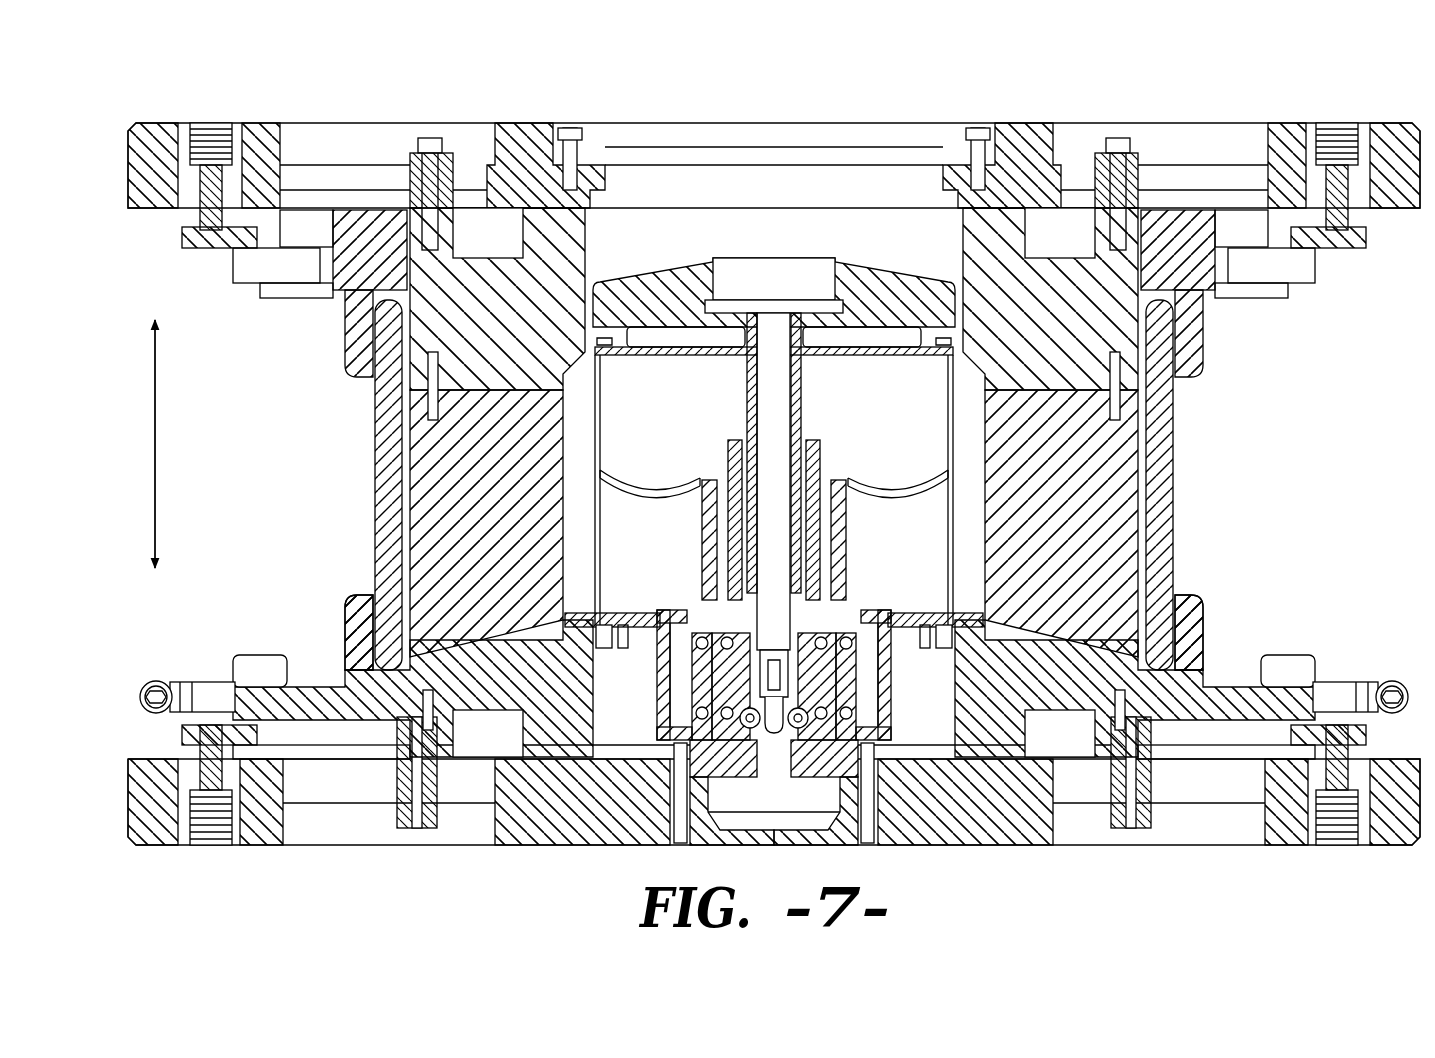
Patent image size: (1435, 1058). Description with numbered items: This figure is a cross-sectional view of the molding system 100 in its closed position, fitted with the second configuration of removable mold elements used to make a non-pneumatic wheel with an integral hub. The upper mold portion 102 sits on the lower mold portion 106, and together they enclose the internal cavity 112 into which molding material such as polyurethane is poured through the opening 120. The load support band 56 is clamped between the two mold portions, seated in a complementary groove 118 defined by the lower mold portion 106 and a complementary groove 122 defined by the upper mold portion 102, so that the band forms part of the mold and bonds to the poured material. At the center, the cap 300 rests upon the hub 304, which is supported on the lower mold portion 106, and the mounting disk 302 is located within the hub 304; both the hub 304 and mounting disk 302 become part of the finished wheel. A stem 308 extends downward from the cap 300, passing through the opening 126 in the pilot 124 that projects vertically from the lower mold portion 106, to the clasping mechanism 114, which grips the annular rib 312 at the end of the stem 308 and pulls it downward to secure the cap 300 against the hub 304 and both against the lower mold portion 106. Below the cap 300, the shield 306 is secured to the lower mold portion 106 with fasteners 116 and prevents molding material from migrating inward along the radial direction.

The molding system 100 is at (930, 96).
The upper mold portion 102 is at (100, 158).
The lower mold portion 106 is at (103, 780).
The internal cavity 112 is at (963, 397).
The clasping mechanism 114 is at (727, 683).
The fasteners 116 is at (598, 640).
The complementary groove 118 is at (358, 683).
The opening 120 is at (765, 255).
The complementary groove 122 is at (370, 296).
The pilot 124 is at (635, 545).
The opening 126 is at (828, 446).
The load support band 56 is at (385, 468).
The cap 300 is at (863, 283).
The mounting disk 302 is at (905, 478).
The hub 304 is at (595, 522).
The shield 306 is at (838, 575).
The stem 308 is at (750, 418).
The annular rib 312 is at (707, 567).